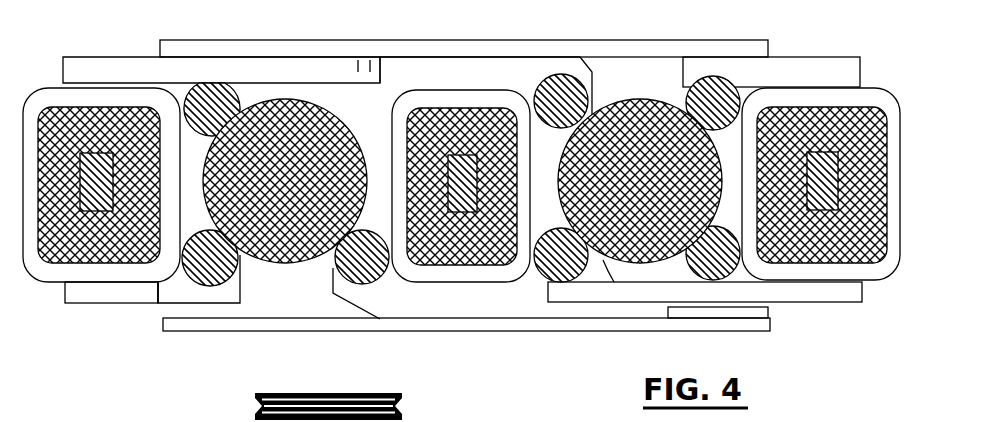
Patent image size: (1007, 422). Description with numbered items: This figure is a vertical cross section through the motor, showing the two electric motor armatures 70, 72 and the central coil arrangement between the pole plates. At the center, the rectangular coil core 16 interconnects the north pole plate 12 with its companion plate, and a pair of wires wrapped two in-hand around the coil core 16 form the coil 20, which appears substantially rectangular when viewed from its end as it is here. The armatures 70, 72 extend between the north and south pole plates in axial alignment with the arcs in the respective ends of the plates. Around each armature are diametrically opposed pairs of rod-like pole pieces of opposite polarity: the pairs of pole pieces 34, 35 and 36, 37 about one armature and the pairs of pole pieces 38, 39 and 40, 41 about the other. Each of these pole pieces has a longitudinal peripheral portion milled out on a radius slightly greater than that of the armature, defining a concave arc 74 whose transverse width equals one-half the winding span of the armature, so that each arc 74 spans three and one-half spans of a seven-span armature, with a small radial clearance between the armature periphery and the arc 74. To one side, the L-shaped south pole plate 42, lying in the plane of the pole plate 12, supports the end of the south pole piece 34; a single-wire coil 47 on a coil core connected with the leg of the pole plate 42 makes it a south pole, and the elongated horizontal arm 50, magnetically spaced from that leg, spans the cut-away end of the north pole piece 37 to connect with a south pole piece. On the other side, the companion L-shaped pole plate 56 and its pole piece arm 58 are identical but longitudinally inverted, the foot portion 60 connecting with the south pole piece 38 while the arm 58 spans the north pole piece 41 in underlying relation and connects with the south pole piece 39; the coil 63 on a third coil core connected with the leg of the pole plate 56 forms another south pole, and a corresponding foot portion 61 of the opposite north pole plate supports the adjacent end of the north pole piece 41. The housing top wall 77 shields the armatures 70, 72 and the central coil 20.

The pole plate 12 is at (600, 70).
The coil core 16 is at (455, 152).
The coil 20 is at (490, 285).
The pole piece 34 is at (222, 288).
The pole piece 35 is at (380, 83).
The pole piece 36 is at (385, 281).
The pole piece 37 is at (243, 83).
The pole piece 38 is at (713, 75).
The pole piece 39 is at (537, 270).
The pole piece 40 is at (540, 88).
The pole piece 41 is at (685, 265).
The L-shaped pole plate 42 is at (82, 305).
The coil 47 is at (40, 85).
The arm 50 is at (108, 57).
The L-shaped pole piece 56 is at (832, 53).
The pole piece arm 58 is at (808, 303).
The foot portion 60 is at (800, 57).
The foot portion 61 is at (138, 305).
The coil 63 is at (870, 86).
The armature 70 is at (614, 283).
The armature 72 is at (268, 263).
The arc 74 is at (328, 98).
The housing top wall 77 is at (493, 42).